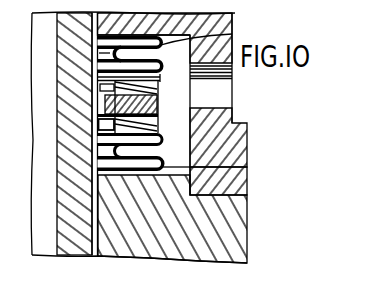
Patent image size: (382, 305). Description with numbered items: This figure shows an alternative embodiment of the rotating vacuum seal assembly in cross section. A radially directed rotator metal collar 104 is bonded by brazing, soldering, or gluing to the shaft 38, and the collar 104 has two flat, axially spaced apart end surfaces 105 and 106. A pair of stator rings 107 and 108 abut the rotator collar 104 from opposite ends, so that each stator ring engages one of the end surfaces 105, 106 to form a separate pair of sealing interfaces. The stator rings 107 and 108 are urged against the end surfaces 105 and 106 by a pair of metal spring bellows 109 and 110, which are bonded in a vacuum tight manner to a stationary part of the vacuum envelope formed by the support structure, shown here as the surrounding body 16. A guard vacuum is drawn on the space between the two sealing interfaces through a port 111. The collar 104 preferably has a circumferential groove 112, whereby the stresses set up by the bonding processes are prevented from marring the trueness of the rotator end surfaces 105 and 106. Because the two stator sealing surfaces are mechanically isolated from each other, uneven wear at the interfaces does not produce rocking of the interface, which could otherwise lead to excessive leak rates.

The body 16 is at (249, 223).
The shaft 38 is at (75, 248).
The rotator metal collar 104 is at (233, 124).
The end surface 105 is at (192, 90).
The end surface 106 is at (157, 118).
The stator ring 107 is at (80, 82).
The stator ring 108 is at (94, 125).
The metal spring bellows 109 is at (233, 31).
The metal spring bellows 110 is at (247, 168).
The port 111 is at (233, 79).
The circumferential groove 112 is at (158, 98).